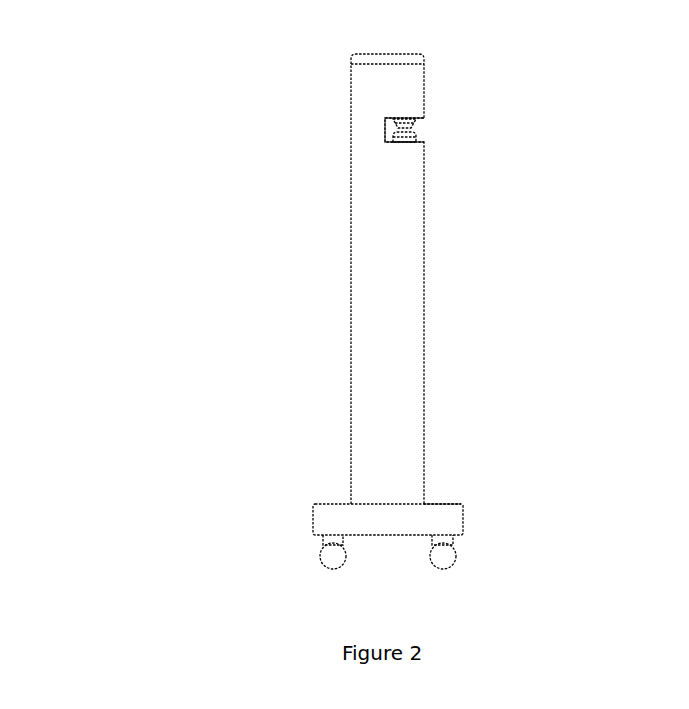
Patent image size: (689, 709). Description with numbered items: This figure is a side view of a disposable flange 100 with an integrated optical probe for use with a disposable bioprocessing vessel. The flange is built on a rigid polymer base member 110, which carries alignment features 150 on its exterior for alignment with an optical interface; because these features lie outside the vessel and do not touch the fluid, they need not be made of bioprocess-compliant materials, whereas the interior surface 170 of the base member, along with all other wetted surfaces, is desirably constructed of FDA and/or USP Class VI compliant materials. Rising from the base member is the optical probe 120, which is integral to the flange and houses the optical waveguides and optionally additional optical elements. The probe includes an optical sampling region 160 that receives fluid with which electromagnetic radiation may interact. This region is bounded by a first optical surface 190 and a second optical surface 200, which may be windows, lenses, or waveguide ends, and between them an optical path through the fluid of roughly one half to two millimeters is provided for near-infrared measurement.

The disposable flange 100 is at (130, 327).
The rigid polymer base member 110 is at (317, 523).
The optical probe 120 is at (351, 194).
The alignment features 150 is at (320, 557).
The optical sampling region 160 is at (418, 128).
The interior surface 170 is at (443, 503).
The first optical surface 190 is at (403, 127).
The second optical surface 200 is at (403, 135).